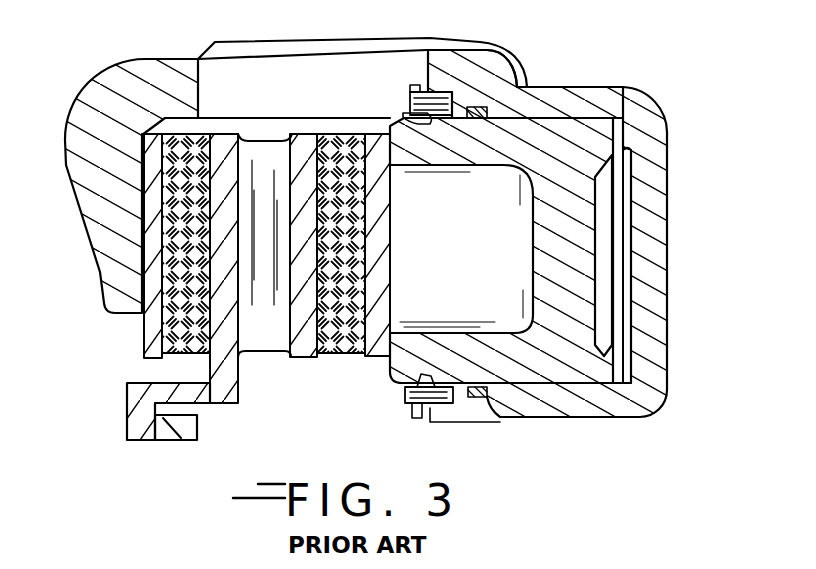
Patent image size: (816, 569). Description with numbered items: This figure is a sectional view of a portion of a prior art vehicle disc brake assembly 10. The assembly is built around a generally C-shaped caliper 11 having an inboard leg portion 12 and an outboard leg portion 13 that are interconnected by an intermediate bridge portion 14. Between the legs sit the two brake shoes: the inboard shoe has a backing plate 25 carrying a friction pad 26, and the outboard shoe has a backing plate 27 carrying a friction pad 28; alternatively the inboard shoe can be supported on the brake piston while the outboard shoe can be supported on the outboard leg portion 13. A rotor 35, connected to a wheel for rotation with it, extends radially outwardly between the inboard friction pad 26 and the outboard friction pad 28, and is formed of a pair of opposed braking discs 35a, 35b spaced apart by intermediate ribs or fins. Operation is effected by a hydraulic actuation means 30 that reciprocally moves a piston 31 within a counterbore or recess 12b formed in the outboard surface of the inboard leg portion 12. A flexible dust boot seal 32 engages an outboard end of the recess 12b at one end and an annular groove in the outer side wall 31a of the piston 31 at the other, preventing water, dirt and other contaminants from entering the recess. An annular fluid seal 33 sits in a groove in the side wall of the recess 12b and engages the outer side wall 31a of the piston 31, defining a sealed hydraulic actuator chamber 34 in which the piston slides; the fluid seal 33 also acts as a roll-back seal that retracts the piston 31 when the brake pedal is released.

The disc brake assembly 10 is at (175, 41).
The caliper 11 is at (676, 134).
The inboard leg portion 12 is at (658, 285).
The recess 12b is at (573, 116).
The outboard leg portion 13 is at (82, 118).
The intermediate bridge portion 14 is at (312, 40).
The backing plate 25 is at (374, 358).
The friction pad 26 is at (344, 355).
The backing plate 27 is at (141, 333).
The friction pad 28 is at (173, 355).
The actuation means 30 is at (669, 97).
The piston 31 is at (593, 381).
The outer side wall 31a is at (587, 381).
The dust boot seal 32 is at (412, 90).
The fluid seal 33 is at (500, 422).
The hydraulic actuator chamber 34 is at (608, 247).
The rotor 35 is at (124, 423).
The braking disc 35a is at (318, 358).
The braking disc 35b is at (207, 390).